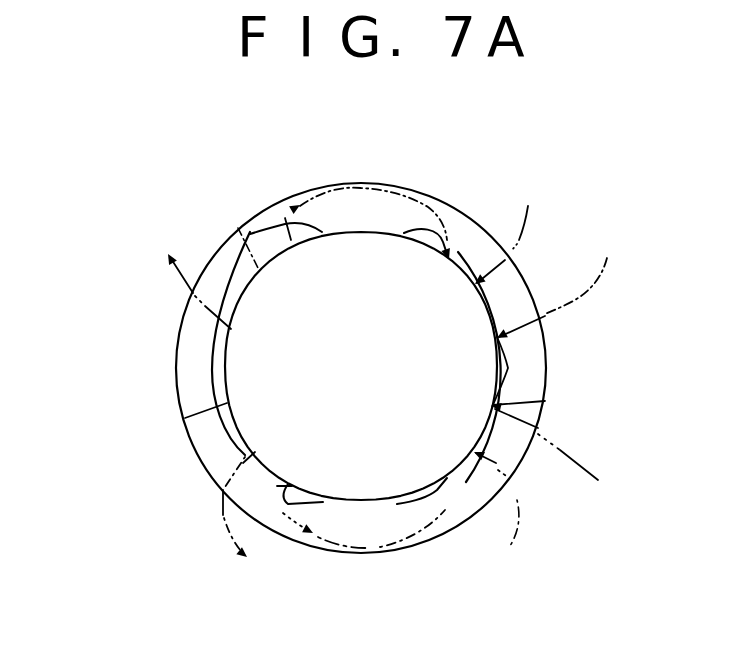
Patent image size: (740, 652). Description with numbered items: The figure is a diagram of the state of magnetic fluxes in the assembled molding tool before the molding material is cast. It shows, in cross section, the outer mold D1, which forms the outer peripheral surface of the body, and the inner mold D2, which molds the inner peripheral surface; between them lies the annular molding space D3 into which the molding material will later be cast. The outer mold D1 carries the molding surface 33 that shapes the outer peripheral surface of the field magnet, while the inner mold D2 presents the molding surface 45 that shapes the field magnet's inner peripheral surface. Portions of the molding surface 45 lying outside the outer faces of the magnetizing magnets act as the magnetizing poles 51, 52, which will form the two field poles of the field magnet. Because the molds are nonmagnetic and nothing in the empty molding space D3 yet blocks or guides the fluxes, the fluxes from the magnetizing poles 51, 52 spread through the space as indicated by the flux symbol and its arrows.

The molding surface 33 is at (208, 271).
The molding surface 45 is at (331, 230).
The magnetizing pole 51 is at (208, 368).
The magnetizing pole 52 is at (508, 368).
The outer mold D1 is at (170, 292).
The inner mold D2 is at (245, 341).
The molding space D3 is at (373, 208).